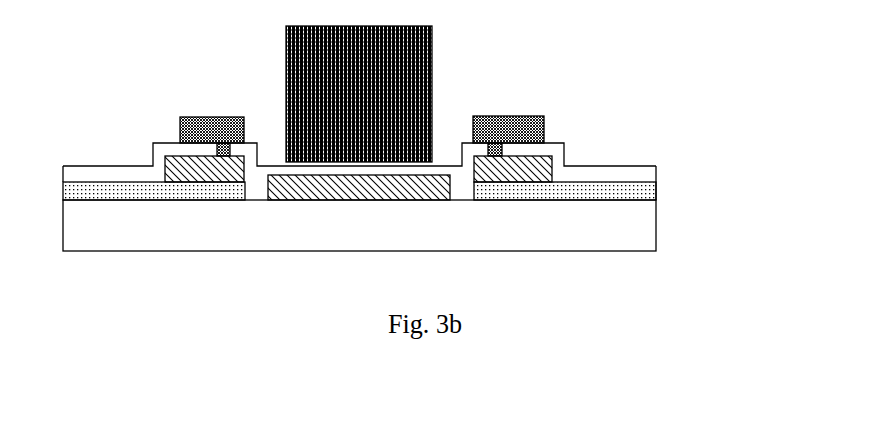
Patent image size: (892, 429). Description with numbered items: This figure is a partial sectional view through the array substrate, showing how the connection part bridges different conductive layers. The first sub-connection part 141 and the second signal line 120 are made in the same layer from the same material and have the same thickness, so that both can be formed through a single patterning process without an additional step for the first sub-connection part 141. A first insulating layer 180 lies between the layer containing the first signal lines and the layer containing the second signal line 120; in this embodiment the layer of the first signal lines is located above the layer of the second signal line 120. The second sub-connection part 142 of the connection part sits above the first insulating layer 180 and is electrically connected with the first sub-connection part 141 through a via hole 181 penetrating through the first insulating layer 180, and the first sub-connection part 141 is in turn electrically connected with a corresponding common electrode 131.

The second signal line 120 is at (362, 185).
The common electrode 131 is at (642, 192).
The first sub-connection part 141 is at (207, 170).
The second sub-connection part 142 is at (205, 124).
The first insulating layer 180 is at (642, 172).
The via hole 181 is at (494, 146).